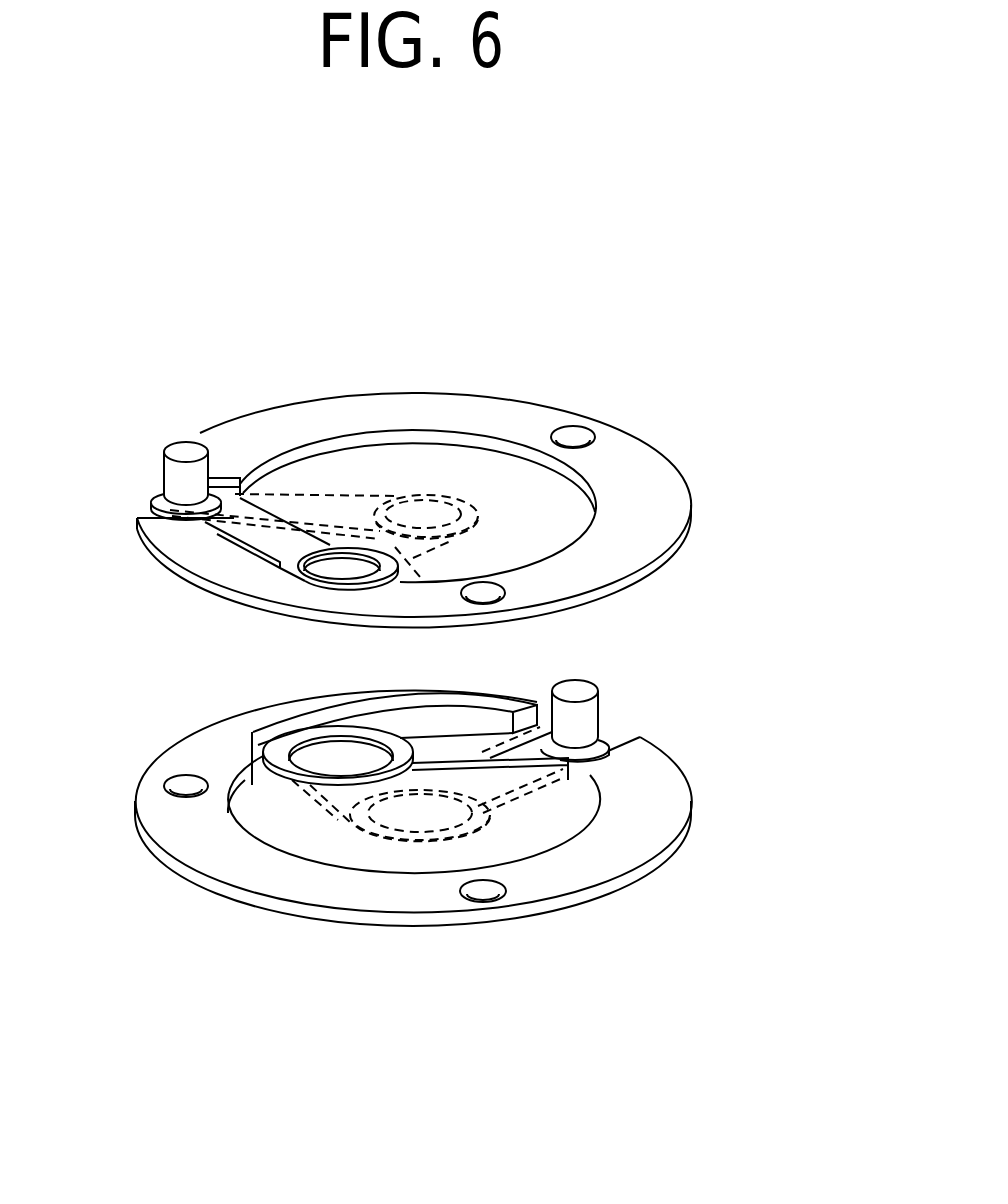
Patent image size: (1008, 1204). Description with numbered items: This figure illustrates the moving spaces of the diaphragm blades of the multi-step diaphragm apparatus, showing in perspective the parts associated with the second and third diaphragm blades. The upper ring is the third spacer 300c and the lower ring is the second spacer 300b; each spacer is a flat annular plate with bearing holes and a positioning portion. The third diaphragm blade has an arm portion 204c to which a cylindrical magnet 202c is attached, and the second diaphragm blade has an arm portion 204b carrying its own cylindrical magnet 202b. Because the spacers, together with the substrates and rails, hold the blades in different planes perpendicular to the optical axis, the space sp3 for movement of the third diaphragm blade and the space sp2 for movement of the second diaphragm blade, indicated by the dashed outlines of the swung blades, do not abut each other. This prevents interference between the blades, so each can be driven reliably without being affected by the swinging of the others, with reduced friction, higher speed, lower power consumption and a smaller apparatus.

The third spacer 300c is at (635, 477).
The second spacer 300b is at (663, 780).
The cylindrical magnet 202c is at (183, 452).
The cylindrical magnet 202b is at (587, 720).
The arm portion 204c is at (263, 539).
The arm portion 204b is at (440, 703).
The space for movement of the third diaphragm blade sp3 is at (333, 503).
The space for movement of the second diaphragm blade sp2 is at (364, 828).